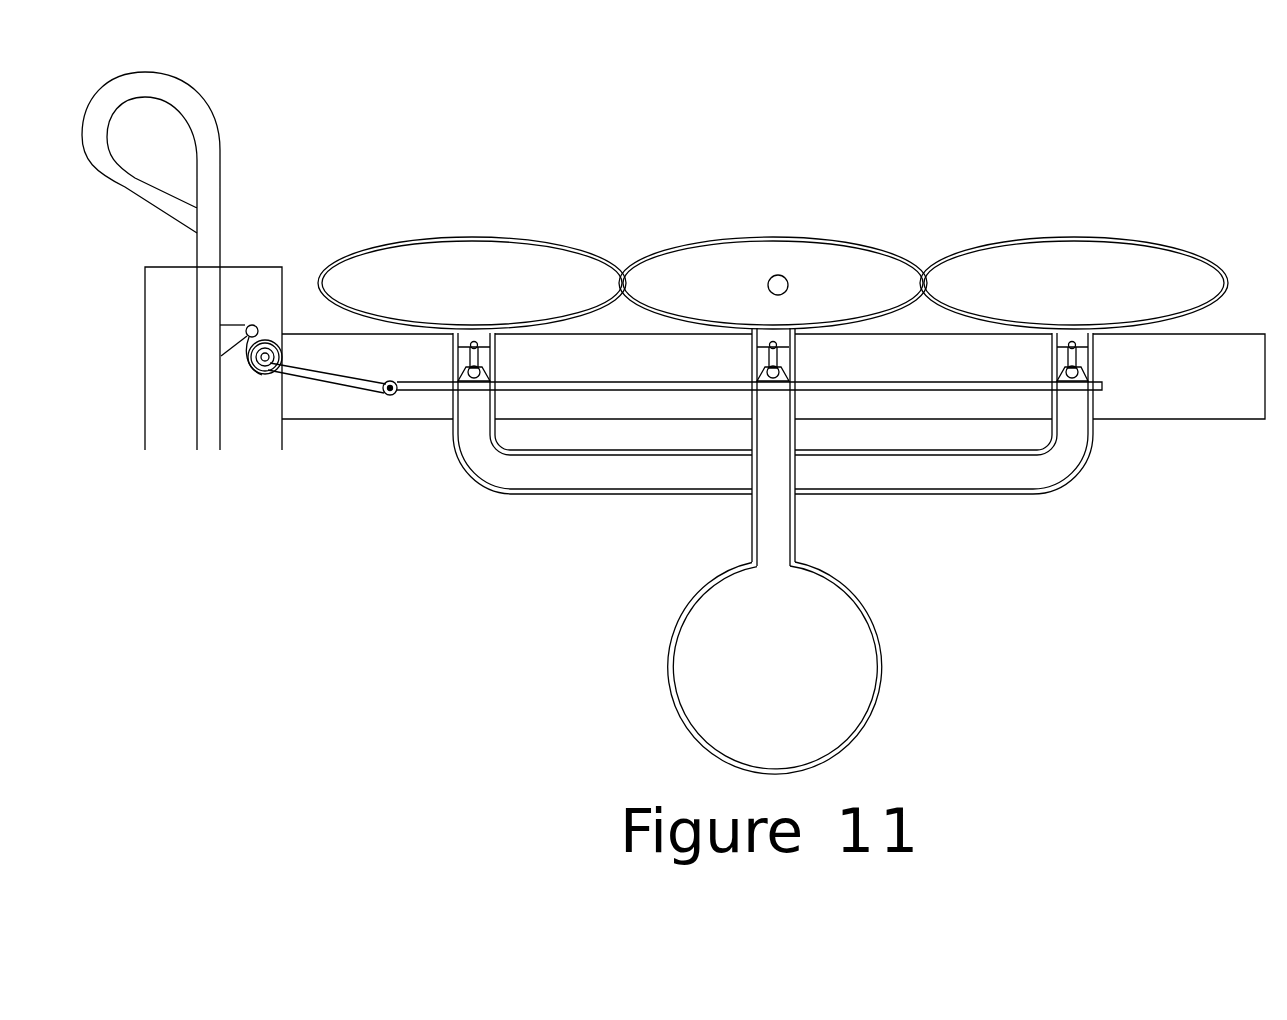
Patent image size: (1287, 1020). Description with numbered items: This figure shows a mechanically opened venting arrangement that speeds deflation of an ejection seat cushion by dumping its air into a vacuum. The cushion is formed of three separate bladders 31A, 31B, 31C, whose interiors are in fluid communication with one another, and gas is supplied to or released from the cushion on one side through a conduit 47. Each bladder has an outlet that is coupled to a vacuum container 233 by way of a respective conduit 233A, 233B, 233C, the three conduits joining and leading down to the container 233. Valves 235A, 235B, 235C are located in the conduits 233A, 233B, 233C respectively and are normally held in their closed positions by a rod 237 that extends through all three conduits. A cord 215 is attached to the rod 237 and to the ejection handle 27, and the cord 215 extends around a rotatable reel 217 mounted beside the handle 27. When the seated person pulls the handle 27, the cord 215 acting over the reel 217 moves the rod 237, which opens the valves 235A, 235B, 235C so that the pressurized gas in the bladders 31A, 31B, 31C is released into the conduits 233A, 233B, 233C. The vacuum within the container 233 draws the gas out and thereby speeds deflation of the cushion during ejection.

The ejection handle 27 is at (197, 102).
The bladder 31A is at (477, 237).
The bladder 31B is at (776, 237).
The bladder 31C is at (1083, 235).
The conduit 47 is at (786, 278).
The cord 215 is at (327, 382).
The rotatable reel 217 is at (253, 369).
The vacuum container 233 is at (873, 710).
The conduit 233A is at (468, 472).
The conduit 233B is at (797, 433).
The conduit 233C is at (1073, 472).
The valve 235A is at (478, 342).
The valve 235B is at (777, 342).
The valve 235C is at (1073, 337).
The rod 237 is at (623, 393).